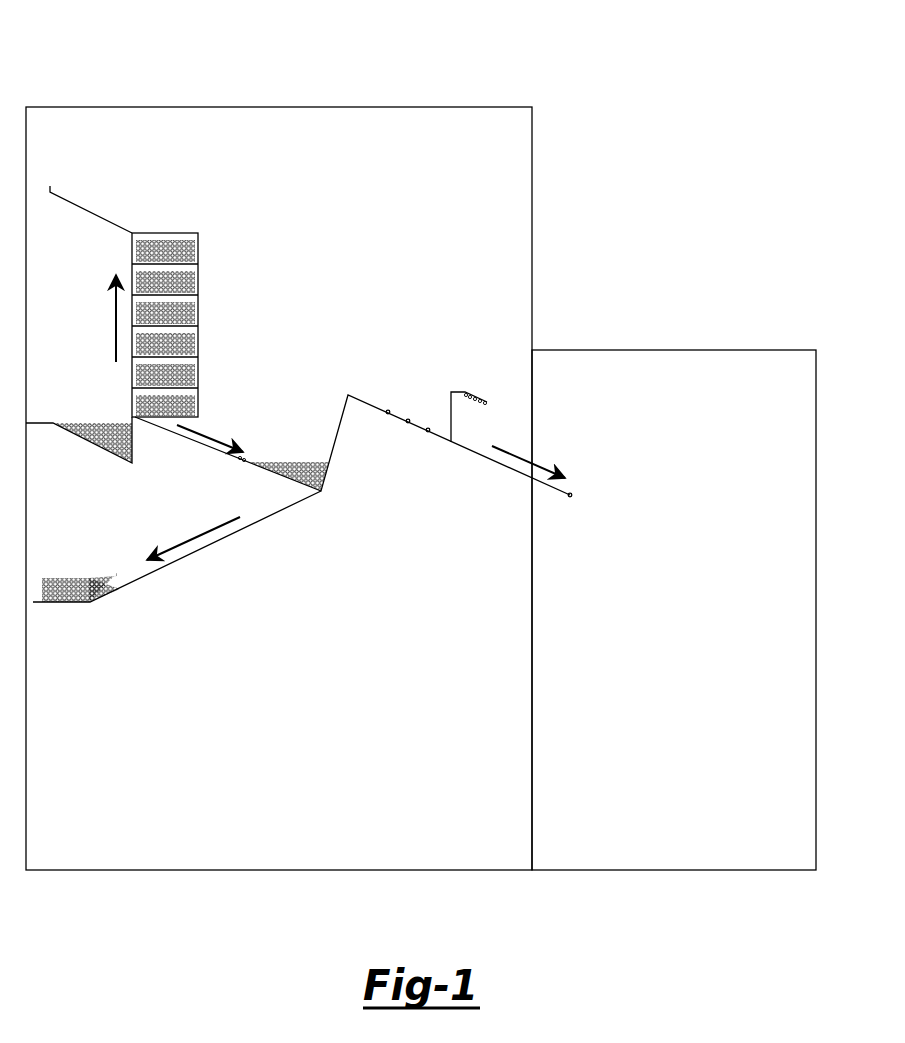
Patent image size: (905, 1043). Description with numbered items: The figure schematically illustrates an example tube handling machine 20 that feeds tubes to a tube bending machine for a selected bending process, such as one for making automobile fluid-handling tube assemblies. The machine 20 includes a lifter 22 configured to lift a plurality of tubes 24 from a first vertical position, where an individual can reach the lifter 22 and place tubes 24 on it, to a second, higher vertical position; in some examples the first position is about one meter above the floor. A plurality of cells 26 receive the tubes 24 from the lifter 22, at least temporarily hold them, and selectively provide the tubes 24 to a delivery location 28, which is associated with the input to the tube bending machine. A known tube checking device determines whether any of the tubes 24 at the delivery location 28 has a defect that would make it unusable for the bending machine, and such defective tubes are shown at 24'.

The tube handling machine 20 is at (94, 78).
The lifter 22 is at (110, 454).
The tubes 24 is at (317, 424).
The defective tubes 24' is at (81, 565).
The cells 26 is at (204, 226).
The delivery location 28 is at (338, 482).